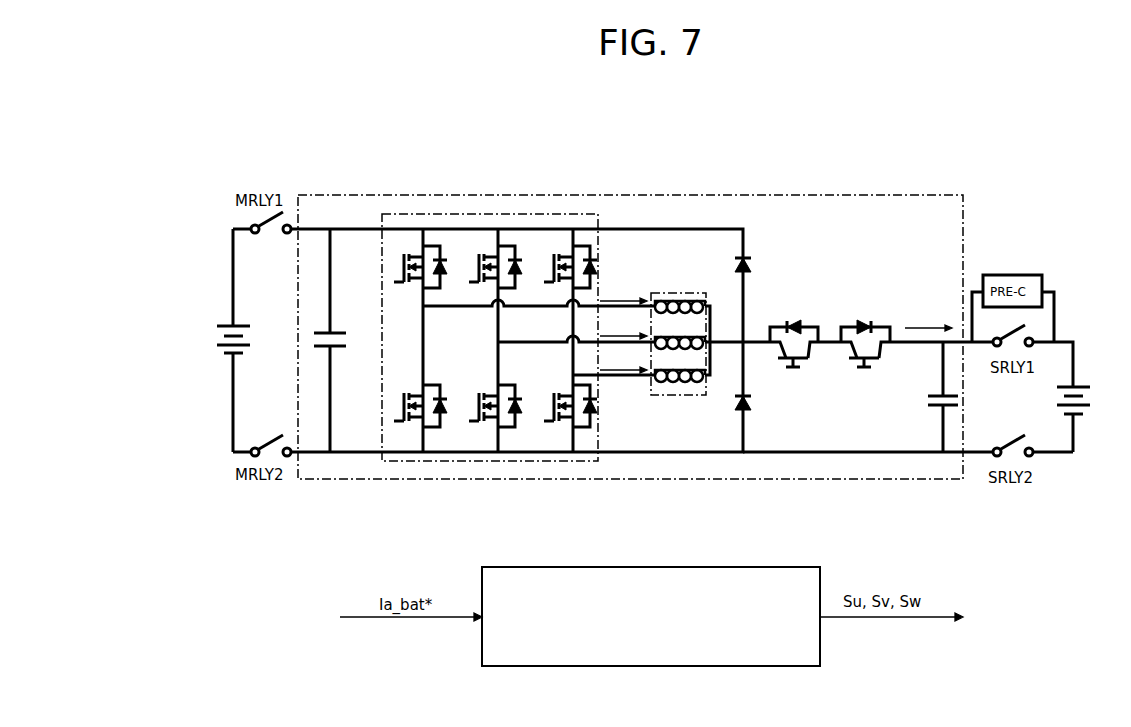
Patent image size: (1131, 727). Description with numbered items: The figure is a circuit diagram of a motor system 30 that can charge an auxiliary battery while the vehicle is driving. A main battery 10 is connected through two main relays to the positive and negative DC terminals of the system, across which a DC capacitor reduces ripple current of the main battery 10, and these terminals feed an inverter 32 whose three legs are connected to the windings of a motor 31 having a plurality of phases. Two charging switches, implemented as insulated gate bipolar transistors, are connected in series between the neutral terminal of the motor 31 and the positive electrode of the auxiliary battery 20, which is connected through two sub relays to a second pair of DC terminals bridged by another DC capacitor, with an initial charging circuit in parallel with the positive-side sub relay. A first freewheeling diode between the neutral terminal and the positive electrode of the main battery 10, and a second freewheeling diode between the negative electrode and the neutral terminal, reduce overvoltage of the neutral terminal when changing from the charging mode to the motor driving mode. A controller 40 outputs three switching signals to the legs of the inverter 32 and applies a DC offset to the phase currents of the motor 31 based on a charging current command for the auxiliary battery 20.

The main battery 10 is at (228, 323).
The auxiliary battery 20 is at (1078, 383).
The motor system 30 is at (957, 195).
The motor 31 is at (700, 293).
The inverter 32 is at (598, 247).
The controller 40 is at (793, 567).